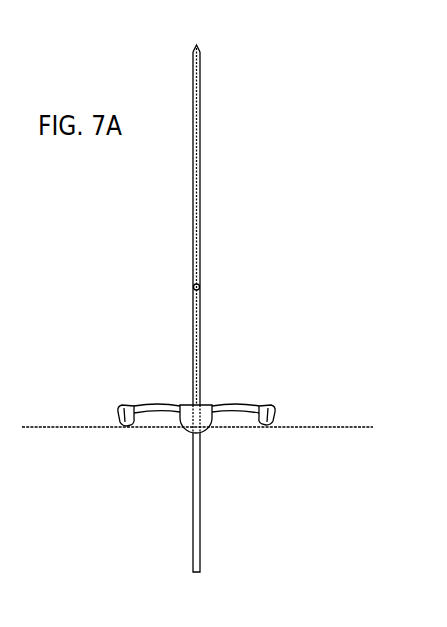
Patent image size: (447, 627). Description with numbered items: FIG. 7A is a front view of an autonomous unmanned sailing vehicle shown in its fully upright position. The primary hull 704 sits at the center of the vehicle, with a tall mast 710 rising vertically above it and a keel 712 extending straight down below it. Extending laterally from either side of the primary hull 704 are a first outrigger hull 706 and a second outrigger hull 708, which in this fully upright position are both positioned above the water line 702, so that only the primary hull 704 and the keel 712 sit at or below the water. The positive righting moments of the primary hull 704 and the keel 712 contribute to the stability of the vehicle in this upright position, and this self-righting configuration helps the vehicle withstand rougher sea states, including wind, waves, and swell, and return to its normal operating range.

The water line 702 is at (24, 432).
The primary hull 704 is at (212, 397).
The first outrigger hull 706 is at (122, 404).
The second outrigger hull 708 is at (280, 408).
The upper shaft / pole 710 is at (205, 163).
The keel 712 is at (185, 508).